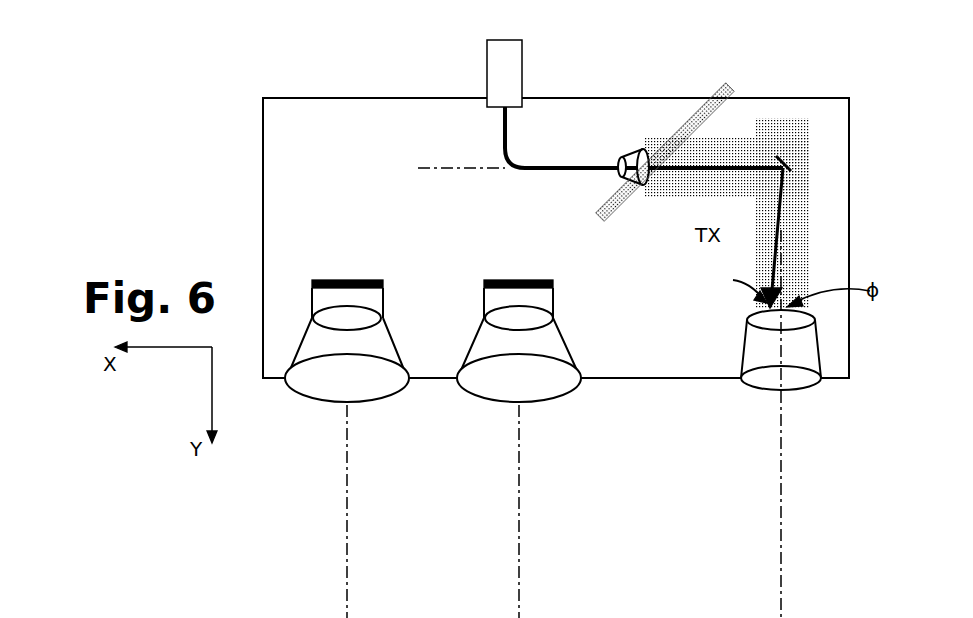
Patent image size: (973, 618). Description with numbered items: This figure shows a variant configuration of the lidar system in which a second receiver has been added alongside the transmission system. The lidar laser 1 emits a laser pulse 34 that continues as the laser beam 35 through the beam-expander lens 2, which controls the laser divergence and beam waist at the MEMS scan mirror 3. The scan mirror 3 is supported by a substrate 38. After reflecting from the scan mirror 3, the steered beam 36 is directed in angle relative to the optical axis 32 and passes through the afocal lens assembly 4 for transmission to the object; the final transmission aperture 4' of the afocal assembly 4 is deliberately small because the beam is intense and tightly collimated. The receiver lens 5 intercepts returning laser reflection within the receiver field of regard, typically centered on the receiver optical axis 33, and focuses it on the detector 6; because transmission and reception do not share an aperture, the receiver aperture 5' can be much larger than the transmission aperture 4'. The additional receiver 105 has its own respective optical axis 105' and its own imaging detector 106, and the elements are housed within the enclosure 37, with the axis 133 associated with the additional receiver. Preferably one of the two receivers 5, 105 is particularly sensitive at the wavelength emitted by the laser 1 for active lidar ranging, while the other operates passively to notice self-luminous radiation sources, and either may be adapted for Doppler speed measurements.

The lidar laser 1 is at (495, 68).
The beam-expander lens 2 is at (632, 177).
The MEMS scan mirror 3 is at (779, 158).
The afocal lens assembly 4 is at (776, 350).
The aperture of the afocal assembly 4' is at (826, 402).
The receiver lens 5 is at (525, 345).
The receiver aperture 5' is at (565, 407).
The detector 6 is at (503, 280).
The optical axis 32 is at (797, 424).
The optical axis of the receiver 33 is at (535, 511).
The laser pulse 34 is at (521, 137).
The laser beam 35 is at (600, 169).
The steered beam 36 is at (758, 238).
The housing 37 is at (556, 239).
The substrate 38 is at (744, 155).
The additional receiver 105 is at (357, 345).
The optical axis of the additional receiver 105' is at (406, 407).
The imaging detector 106 is at (332, 280).
The second receive optical axis 133 is at (370, 511).